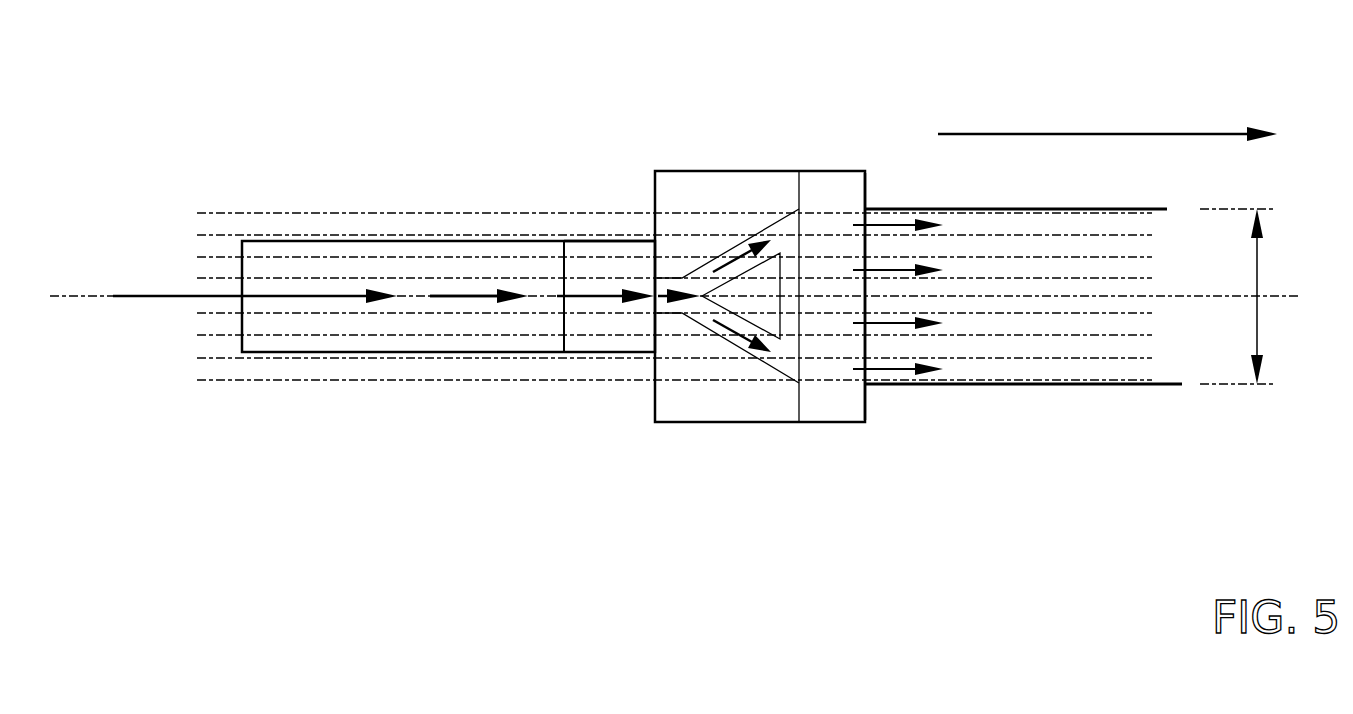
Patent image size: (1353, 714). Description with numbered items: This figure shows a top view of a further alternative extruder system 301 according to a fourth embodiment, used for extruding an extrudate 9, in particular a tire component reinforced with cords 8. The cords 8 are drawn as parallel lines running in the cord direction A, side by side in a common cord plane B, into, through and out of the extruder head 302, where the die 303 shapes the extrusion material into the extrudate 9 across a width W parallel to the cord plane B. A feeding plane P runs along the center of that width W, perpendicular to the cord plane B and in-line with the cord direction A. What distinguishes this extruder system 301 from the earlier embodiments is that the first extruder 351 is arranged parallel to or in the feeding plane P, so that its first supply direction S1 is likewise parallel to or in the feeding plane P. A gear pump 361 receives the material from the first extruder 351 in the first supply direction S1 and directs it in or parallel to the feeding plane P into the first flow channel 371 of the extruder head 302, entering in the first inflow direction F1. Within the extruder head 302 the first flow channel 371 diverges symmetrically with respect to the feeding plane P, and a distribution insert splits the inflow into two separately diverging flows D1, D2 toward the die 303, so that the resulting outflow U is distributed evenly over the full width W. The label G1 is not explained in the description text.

The extruder system 301 is at (398, 110).
The extruder head 302 is at (698, 170).
The die 303 is at (857, 183).
The first extruder 351 is at (402, 340).
The gear pump 361 is at (632, 248).
The first flow channel 371 is at (710, 325).
The cords 8 is at (226, 257).
The extrudate 9 is at (1043, 372).
The cord direction A is at (145, 296).
The cord plane B is at (330, 235).
The feeding plane P is at (672, 296).
The first supply direction S1 is at (465, 295).
The gap G1 is at (593, 300).
The first inflow direction F1 is at (662, 302).
The first diverging flow D1 is at (730, 262).
The second diverging flow D2 is at (723, 337).
The outflow U is at (895, 322).
The width W is at (1245, 296).